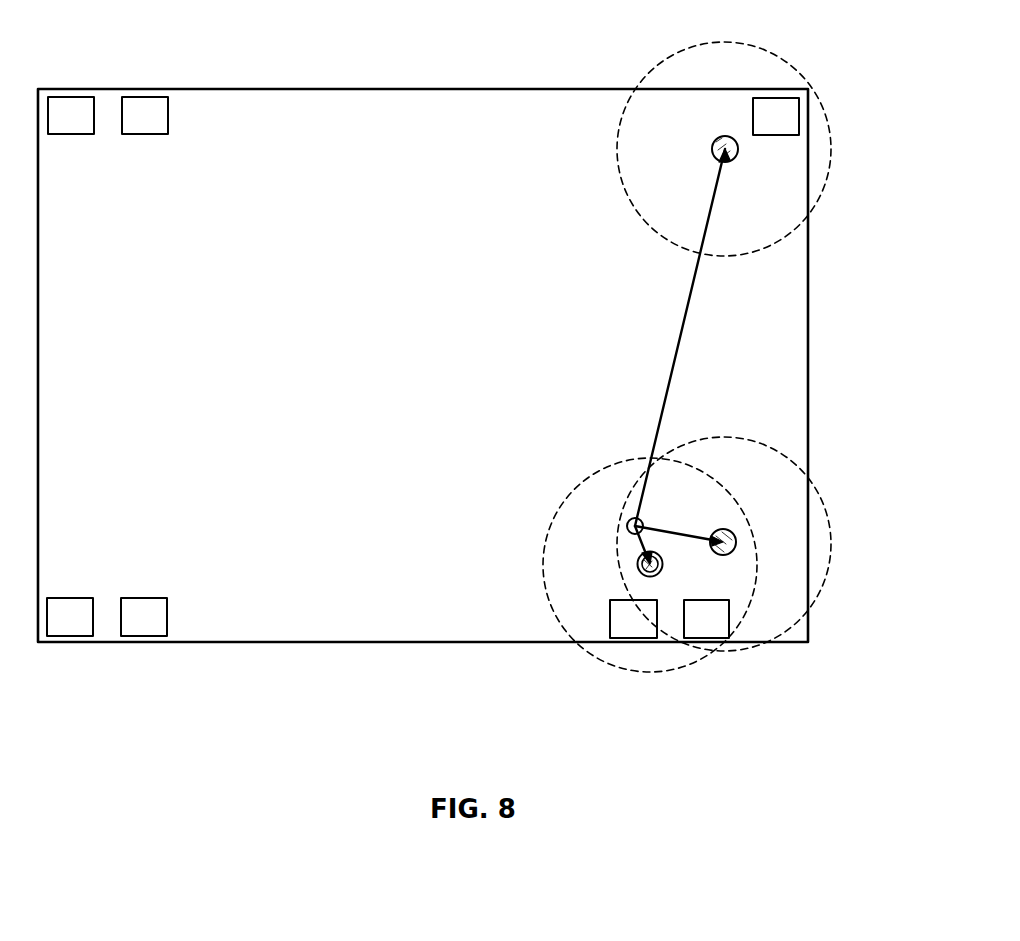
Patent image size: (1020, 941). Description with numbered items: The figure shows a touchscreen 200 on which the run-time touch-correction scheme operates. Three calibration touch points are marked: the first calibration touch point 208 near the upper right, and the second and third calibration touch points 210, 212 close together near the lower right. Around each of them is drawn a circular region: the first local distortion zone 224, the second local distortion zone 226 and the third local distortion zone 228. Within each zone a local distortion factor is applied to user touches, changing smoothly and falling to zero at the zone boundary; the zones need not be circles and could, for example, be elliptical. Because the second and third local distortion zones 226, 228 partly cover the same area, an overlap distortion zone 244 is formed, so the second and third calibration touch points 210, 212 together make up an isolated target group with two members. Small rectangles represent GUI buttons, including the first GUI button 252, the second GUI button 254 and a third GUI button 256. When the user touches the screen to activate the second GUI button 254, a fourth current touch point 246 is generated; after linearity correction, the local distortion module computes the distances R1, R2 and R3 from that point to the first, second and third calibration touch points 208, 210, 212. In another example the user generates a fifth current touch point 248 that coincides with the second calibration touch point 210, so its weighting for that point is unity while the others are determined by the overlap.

The touchscreen 200 is at (110, 88).
The first calibration touch point 208 is at (725, 136).
The second calibration touch point 210 is at (650, 577).
The third calibration touch point 212 is at (736, 542).
The first local distortion zone 224 is at (826, 183).
The second local distortion zone 226 is at (587, 660).
The third local distortion zone 228 is at (821, 592).
The overlap distortion zone 244 is at (733, 580).
The fourth current touch point 246 is at (630, 518).
The fifth current touch point 248 is at (638, 564).
The first GUI button 252 is at (799, 117).
The second GUI button 254 is at (633, 640).
The third GUI button 256 is at (715, 640).
The distance to first calibration touch point R1 is at (682, 340).
The distance to second calibration touch point R2 is at (633, 540).
The distance to third calibration touch point R3 is at (678, 532).